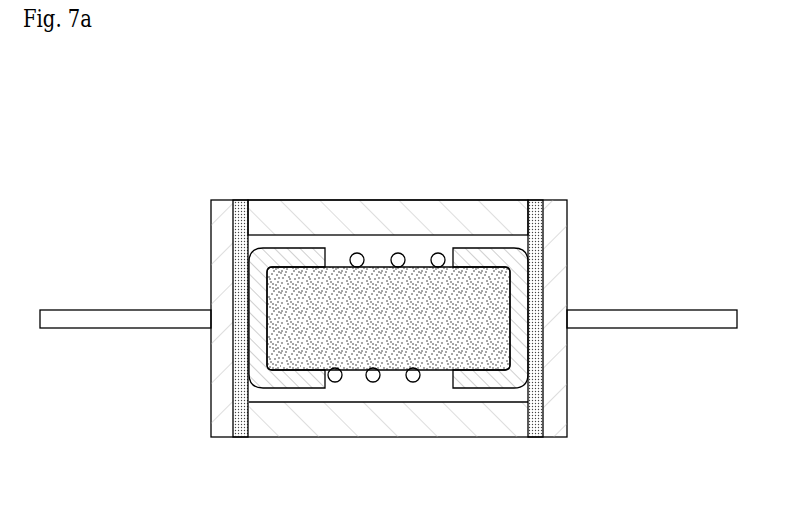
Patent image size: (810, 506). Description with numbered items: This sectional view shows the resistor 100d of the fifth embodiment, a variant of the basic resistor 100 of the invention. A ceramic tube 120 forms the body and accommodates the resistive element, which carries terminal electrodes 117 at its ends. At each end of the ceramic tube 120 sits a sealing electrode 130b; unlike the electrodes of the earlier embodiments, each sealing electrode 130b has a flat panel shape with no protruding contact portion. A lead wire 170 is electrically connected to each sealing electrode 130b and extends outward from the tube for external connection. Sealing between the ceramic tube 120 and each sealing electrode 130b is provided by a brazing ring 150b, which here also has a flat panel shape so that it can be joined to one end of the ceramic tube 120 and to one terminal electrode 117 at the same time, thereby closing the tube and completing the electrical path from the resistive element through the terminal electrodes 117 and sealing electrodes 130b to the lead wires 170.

The resistor 100d is at (270, 68).
The ceramic tube 120 is at (380, 199).
The sealing electrode 130b is at (220, 402).
The brazing ring 150b is at (241, 350).
The lead wire 170 is at (690, 323).
The terminal electrode 117 is at (287, 389).
The resistor 100 is at (352, 374).